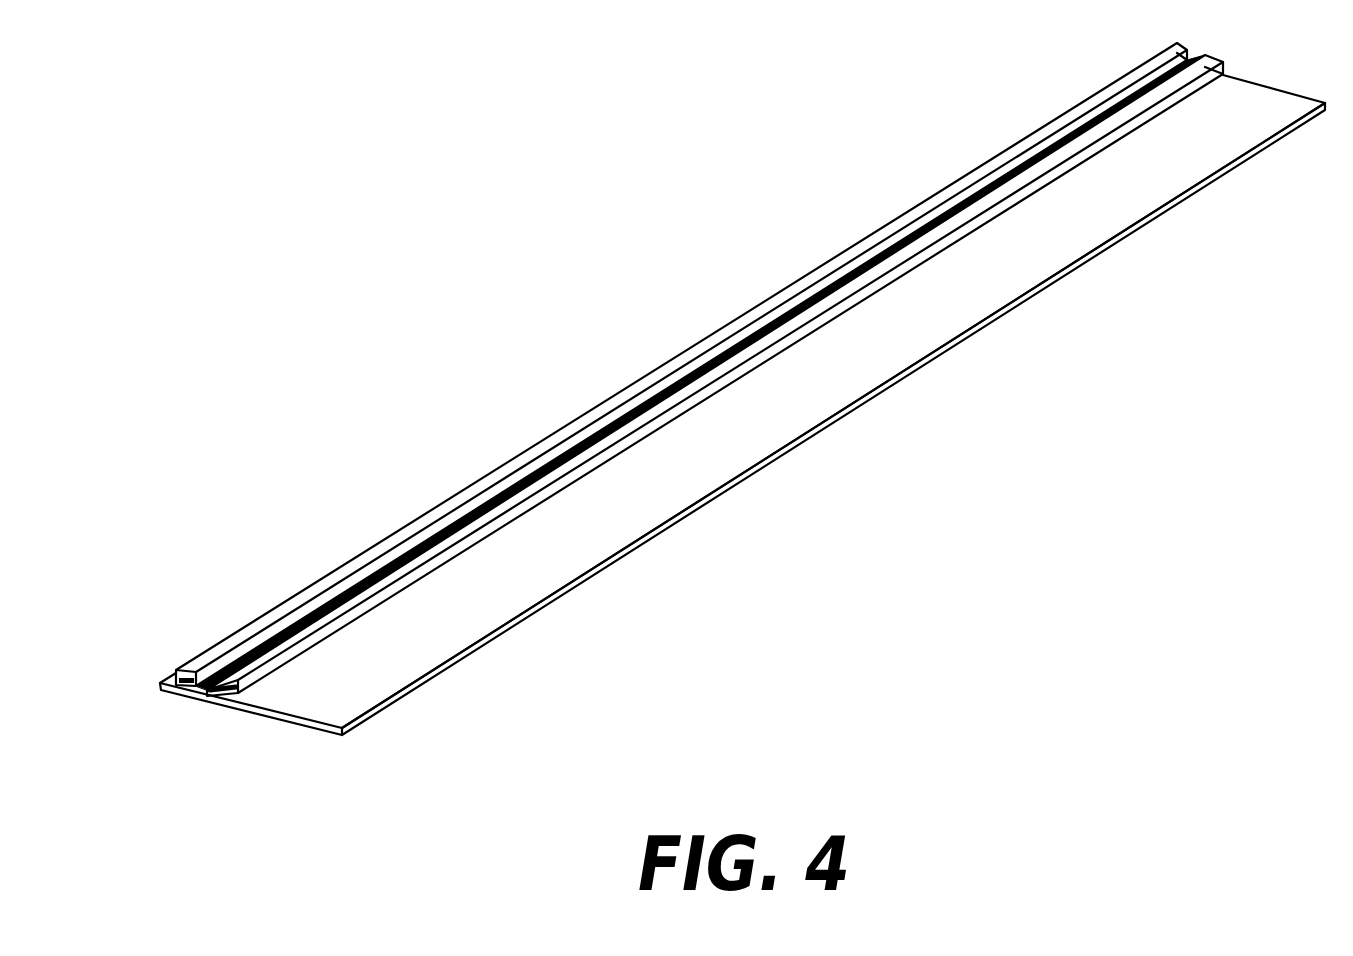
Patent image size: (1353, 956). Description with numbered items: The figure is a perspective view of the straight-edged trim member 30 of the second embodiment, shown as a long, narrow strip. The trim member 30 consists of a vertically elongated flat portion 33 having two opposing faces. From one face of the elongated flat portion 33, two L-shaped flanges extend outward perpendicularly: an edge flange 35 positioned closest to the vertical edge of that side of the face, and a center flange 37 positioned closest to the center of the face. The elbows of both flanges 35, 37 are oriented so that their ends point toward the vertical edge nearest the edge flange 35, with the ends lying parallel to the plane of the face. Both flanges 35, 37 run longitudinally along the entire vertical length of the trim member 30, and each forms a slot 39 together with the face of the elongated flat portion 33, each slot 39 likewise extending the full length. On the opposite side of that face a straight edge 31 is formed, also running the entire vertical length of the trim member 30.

The straight-edged trim member 30 is at (710, 428).
The straight edge 31 is at (647, 542).
The elongated flat portion 33 is at (897, 337).
The edge flange 35 is at (245, 640).
The center flange 37 is at (292, 648).
The slot 39 is at (177, 690).